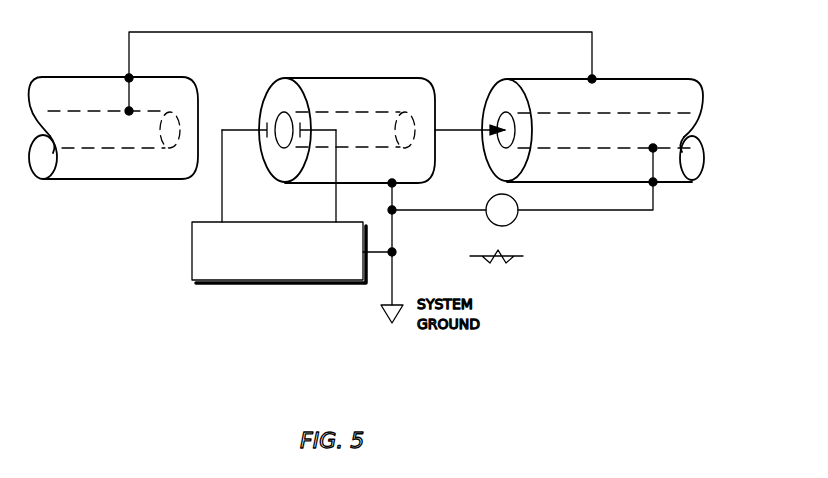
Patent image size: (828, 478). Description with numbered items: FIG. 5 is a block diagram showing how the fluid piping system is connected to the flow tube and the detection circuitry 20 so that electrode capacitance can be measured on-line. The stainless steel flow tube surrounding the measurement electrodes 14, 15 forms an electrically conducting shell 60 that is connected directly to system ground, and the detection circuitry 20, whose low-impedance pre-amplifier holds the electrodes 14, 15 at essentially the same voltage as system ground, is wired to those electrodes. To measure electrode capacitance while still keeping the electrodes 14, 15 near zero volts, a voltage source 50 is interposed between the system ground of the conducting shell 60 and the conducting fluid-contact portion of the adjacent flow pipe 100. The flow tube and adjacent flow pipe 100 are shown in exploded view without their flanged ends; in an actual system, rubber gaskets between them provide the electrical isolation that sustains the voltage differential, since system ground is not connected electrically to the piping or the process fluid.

The measurement electrode 14 is at (264, 124).
The measurement electrode 15 is at (301, 122).
The detection circuitry 20 is at (222, 281).
The voltage source 50 is at (520, 214).
The electrically conducting shell 60 is at (397, 78).
The adjacent flow pipe 100 is at (659, 78).